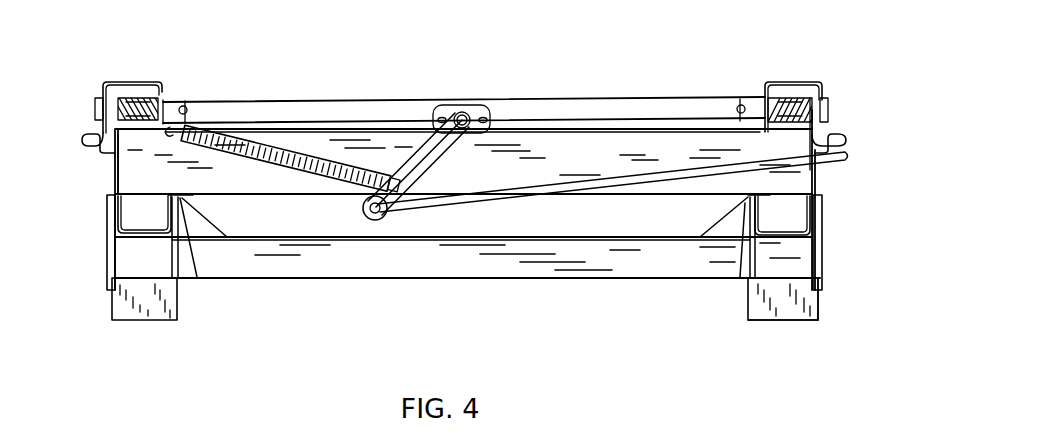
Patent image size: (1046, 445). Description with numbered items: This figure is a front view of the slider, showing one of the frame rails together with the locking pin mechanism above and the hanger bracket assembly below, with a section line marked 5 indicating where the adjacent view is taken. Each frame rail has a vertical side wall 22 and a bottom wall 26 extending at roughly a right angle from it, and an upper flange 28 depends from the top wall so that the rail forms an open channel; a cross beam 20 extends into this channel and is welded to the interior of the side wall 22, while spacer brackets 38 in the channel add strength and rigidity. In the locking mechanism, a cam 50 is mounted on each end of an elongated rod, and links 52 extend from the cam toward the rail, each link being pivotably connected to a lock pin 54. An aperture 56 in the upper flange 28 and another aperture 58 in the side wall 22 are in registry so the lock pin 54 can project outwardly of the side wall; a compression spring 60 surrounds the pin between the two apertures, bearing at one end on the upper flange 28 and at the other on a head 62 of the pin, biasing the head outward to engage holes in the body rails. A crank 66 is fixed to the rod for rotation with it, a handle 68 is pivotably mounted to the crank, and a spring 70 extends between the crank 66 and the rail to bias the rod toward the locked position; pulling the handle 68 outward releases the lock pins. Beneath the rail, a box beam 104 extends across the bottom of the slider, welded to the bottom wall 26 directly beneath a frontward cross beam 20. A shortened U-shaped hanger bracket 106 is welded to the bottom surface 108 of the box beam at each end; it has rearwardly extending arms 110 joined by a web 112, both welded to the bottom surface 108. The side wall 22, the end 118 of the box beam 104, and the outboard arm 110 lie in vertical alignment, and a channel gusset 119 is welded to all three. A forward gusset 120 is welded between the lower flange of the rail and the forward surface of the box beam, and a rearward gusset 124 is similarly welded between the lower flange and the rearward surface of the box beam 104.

The section line 5- 5 is at (293, 342).
The cross beam 20 is at (590, 164).
The side wall 22 is at (118, 220).
The bottom wall 26 is at (135, 240).
The upper flange 28 is at (762, 123).
The spacer bracket 38 is at (137, 171).
The cam 50 is at (477, 112).
The link 52 is at (343, 115).
The lock pin 54 is at (795, 97).
The aperture 56 is at (768, 97).
The aperture 58 is at (823, 90).
The compression spring 60 is at (785, 95).
The head 62 is at (830, 107).
The crank 66 is at (430, 158).
The handle 68 is at (505, 196).
The spring 70 is at (240, 155).
The box beam 104 is at (617, 260).
The hanger bracket 106 is at (770, 330).
The bottom surface 108 is at (658, 280).
The arm 110 is at (112, 306).
The web 112 is at (790, 313).
The end 118 is at (98, 268).
The channel gusset 119 is at (110, 240).
The forward gusset 120 is at (183, 270).
The rearward gusset 124 is at (195, 223).